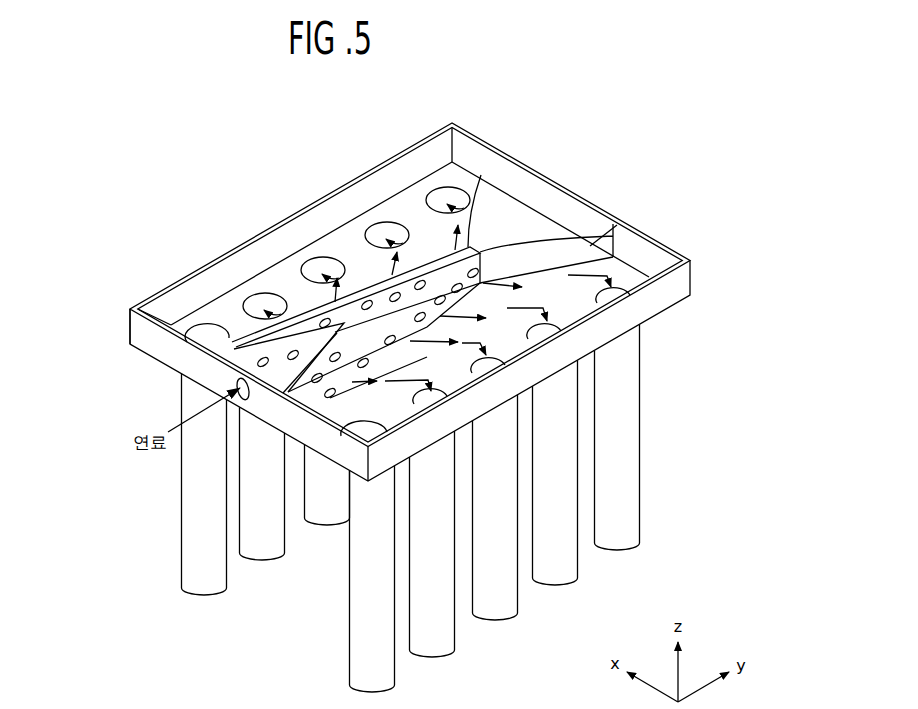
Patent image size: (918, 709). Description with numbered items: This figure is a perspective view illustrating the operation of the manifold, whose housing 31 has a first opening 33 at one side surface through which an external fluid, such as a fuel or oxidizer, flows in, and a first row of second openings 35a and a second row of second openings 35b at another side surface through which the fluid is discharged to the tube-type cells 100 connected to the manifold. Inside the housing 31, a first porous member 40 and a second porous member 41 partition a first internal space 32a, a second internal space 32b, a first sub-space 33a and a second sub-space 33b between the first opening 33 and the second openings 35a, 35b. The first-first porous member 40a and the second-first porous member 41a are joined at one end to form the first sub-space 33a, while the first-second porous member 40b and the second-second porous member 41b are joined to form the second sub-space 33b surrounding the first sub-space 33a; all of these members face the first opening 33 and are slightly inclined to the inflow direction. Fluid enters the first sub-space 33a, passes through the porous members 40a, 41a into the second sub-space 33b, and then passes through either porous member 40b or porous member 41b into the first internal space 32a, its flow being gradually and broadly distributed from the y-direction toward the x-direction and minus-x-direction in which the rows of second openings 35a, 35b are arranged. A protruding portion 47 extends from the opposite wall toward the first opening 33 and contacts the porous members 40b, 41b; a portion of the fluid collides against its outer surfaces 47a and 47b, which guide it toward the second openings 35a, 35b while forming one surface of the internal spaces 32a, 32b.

The housing 31 is at (668, 244).
The first internal space 32a is at (270, 283).
The second internal space 32b is at (561, 305).
The first opening 33 is at (236, 384).
The first sub-space 33a is at (266, 392).
The second sub-space 33b is at (355, 336).
The first row of second openings 35a is at (230, 333).
The second row of second openings 35b is at (343, 412).
The first porous member 40 is at (110, 200).
The first-first porous member 40a is at (138, 308).
The first-second porous member 40b is at (230, 340).
The second porous member 41 is at (573, 428).
The second-first porous member 41a is at (418, 422).
The second-second porous member 41b is at (422, 348).
The protruding portion 47 is at (556, 203).
The outer surface of the protruding portion 47a is at (481, 175).
The outer surface of the protruding portion 47b is at (598, 242).
The tube-type cells 100 is at (630, 508).